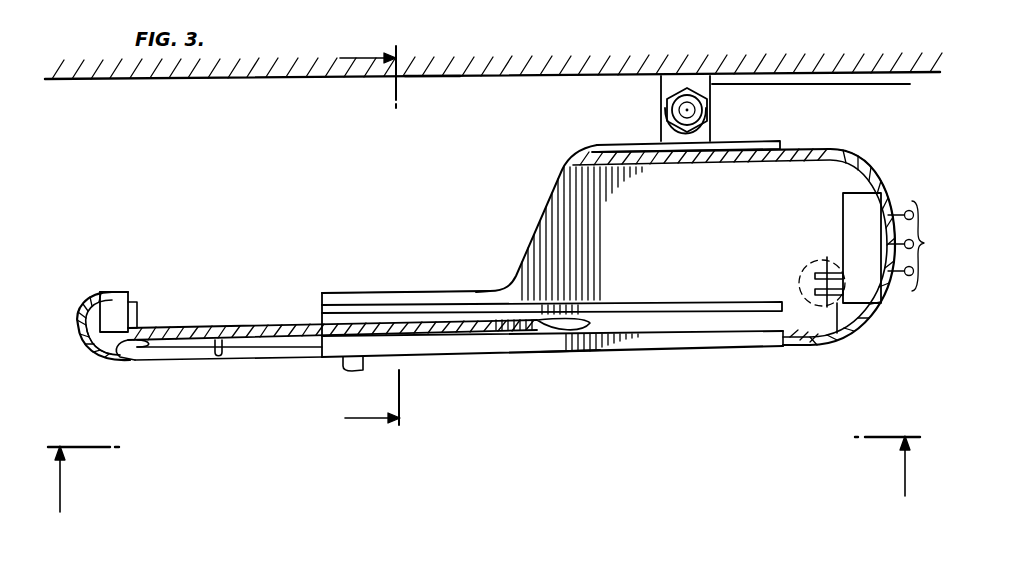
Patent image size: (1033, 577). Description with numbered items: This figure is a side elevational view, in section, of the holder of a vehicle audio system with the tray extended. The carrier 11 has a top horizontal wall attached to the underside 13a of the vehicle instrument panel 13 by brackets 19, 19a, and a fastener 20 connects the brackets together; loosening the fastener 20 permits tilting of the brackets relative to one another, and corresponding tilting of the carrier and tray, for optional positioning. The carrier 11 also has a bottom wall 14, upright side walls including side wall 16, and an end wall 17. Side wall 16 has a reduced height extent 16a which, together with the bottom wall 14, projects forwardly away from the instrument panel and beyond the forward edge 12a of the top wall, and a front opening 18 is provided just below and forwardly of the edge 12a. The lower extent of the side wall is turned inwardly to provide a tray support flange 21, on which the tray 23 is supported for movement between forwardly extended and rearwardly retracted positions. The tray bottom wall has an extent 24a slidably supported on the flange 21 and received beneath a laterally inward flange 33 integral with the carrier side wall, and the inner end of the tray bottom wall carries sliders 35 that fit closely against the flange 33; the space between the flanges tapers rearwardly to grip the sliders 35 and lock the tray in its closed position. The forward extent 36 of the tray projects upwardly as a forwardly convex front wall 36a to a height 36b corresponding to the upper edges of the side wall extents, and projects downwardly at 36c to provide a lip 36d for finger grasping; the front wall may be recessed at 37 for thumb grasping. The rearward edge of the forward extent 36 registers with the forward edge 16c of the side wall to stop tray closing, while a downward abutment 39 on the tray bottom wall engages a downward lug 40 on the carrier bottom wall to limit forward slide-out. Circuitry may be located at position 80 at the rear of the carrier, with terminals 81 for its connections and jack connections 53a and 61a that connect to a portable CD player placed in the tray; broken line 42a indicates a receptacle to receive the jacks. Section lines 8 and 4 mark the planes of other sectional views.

The vehicle instrument panel 13 is at (212, 88).
The underside of the instrument panel 13a is at (428, 78).
The section line 8 is at (370, 241).
The section line 4 is at (484, 474).
The bracket 19 is at (690, 80).
The bracket 19a is at (712, 131).
The fastener 20 is at (670, 109).
The carrier 11 is at (540, 182).
The forward edge of top wall 12a is at (566, 156).
The front opening 18 is at (550, 226).
The side wall 16 is at (670, 240).
The end wall 17 is at (886, 190).
The flange 33 is at (669, 303).
The sliders 35 is at (576, 317).
The tray support flange 21 is at (665, 339).
The bottom wall extent 24a is at (450, 356).
The bottom wall 14 is at (561, 352).
The forward edge of side wall 16c is at (309, 302).
The reduced height extent of side wall 16a is at (415, 290).
The tray 23 is at (228, 296).
The downward lug 40 is at (338, 364).
The downward abutment 39 is at (346, 374).
The forward extent of tray 36 is at (74, 356).
The indentation 37 is at (81, 303).
The height of forward extent 36b is at (112, 291).
The lip 36d is at (150, 326).
The front wall 36a is at (96, 355).
The downward projection of forward extent 36c is at (125, 364).
The circuitry position 80 is at (862, 248).
The terminals 81 is at (920, 246).
The jack connection 53a is at (818, 267).
The receptacle 42a is at (813, 333).
The jack connection 61a is at (842, 337).